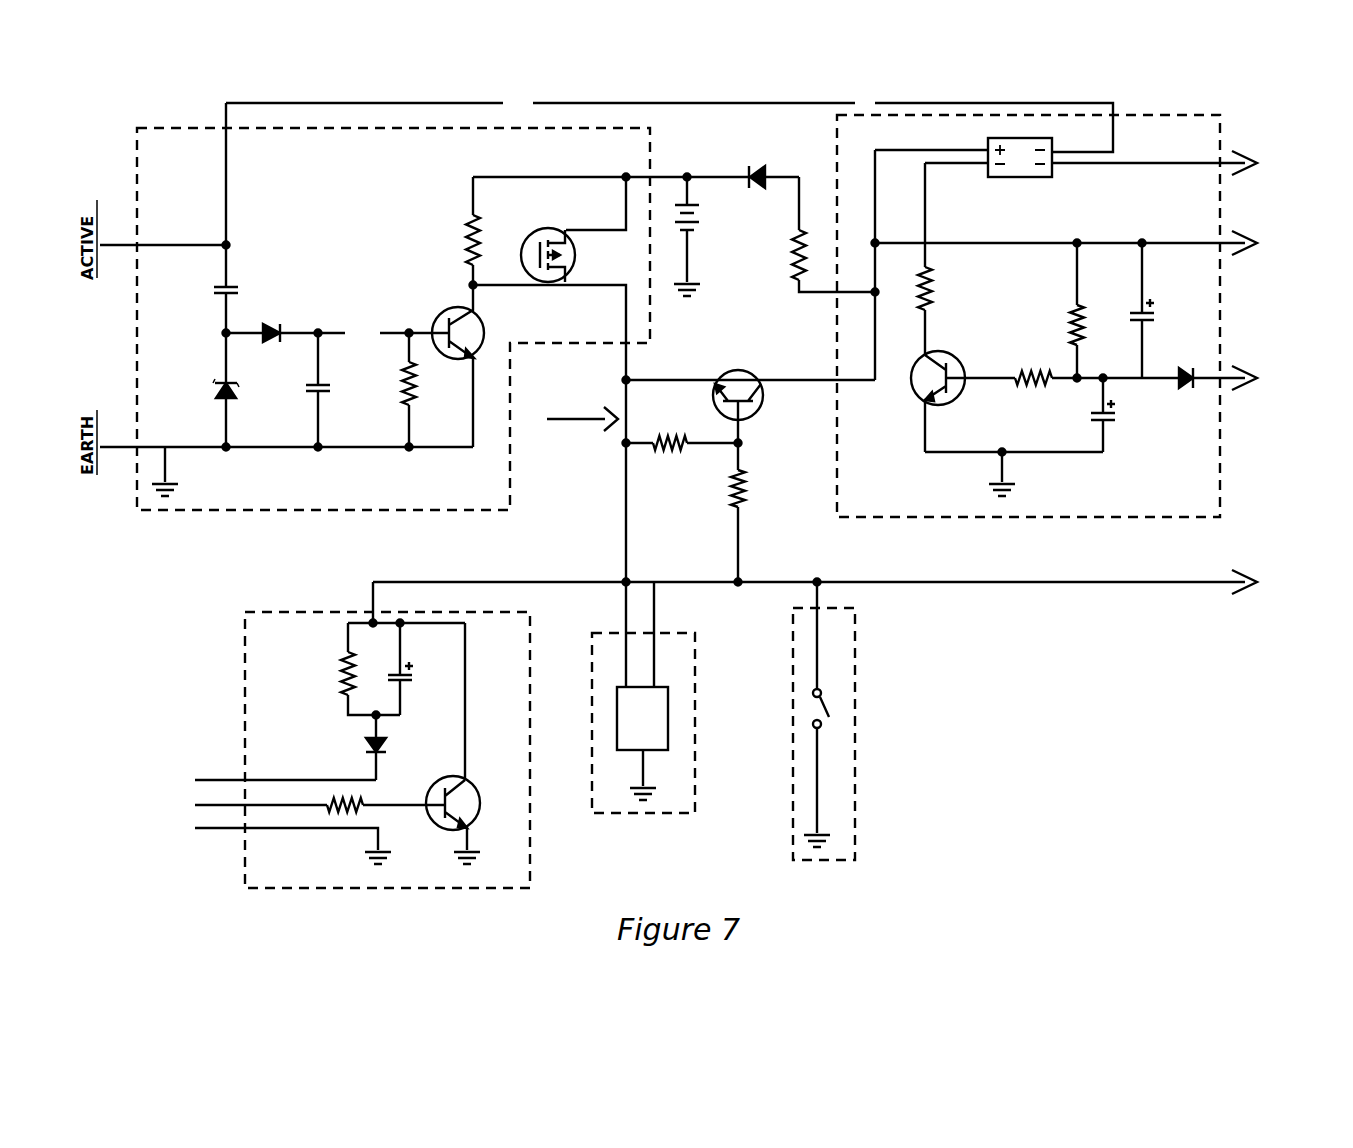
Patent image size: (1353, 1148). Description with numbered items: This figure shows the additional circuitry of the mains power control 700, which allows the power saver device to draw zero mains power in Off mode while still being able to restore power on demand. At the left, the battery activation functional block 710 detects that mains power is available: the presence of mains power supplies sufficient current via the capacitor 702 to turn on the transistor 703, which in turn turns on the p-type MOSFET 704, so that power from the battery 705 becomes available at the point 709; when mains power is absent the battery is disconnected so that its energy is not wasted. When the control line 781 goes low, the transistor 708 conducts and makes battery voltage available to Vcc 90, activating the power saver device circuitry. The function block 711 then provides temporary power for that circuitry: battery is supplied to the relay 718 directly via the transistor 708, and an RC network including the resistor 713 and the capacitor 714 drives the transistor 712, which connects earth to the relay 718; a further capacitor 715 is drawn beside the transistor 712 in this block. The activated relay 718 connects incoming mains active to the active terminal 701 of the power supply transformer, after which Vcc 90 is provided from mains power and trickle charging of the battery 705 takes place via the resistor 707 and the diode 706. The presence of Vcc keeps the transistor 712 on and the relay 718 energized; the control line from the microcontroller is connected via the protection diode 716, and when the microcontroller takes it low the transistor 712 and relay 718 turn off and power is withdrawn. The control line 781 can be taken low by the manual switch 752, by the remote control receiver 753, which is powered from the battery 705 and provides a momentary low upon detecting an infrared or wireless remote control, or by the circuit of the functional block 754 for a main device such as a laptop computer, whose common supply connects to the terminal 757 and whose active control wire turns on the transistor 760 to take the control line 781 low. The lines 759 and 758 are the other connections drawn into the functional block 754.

The battery activation functional block 710 is at (178, 128).
The capacitor 702 is at (238, 290).
The transistor 703 is at (485, 336).
The p-type MOSFET 704 is at (543, 232).
The battery 705 is at (700, 218).
The diode 706 is at (749, 172).
The resistor 707 is at (794, 262).
The transistor 708 is at (759, 372).
The point 709 is at (582, 409).
The function block 711 is at (1150, 115).
The relay 718 is at (1038, 177).
The resistor 713 is at (1072, 302).
The capacitor 714 is at (1150, 305).
The transistor 712 is at (966, 368).
The capacitor 715 is at (1110, 421).
The protection diode 716 is at (1196, 385).
The active terminal 701 is at (1256, 170).
The Vcc 90 is at (1256, 250).
The mains power control 700 is at (1257, 384).
The control line 781 is at (1257, 588).
The functional block 754 is at (226, 627).
The input line 759 is at (195, 780).
The input line 758 is at (195, 805).
The terminal 757 is at (195, 828).
The transistor 760 is at (472, 788).
The remote control receiver 753 is at (615, 814).
The manual switch 752 is at (856, 782).